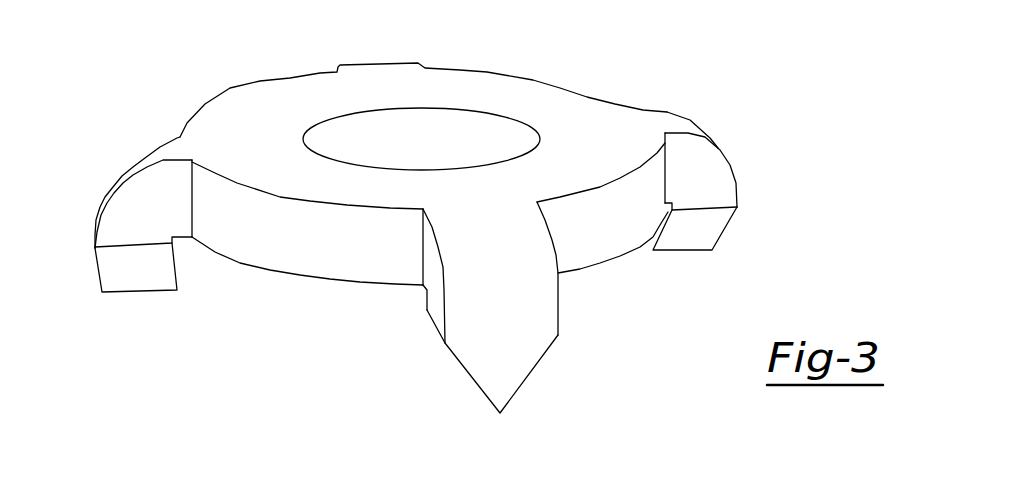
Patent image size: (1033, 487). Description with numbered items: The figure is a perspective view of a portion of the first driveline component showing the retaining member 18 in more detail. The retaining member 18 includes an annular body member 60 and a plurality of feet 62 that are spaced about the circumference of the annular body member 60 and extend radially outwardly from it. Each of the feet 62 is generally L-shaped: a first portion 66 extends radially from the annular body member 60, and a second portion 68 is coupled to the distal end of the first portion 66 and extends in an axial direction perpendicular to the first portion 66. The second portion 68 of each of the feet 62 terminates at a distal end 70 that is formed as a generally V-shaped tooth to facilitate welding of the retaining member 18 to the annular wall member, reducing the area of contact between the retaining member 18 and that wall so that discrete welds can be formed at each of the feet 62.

The retaining member 18 is at (449, 213).
The annular body member 60 is at (292, 100).
The feet 62 is at (449, 233).
The first portion 66 is at (153, 188).
The second portion 68 is at (112, 235).
The distal end 70 is at (143, 275).